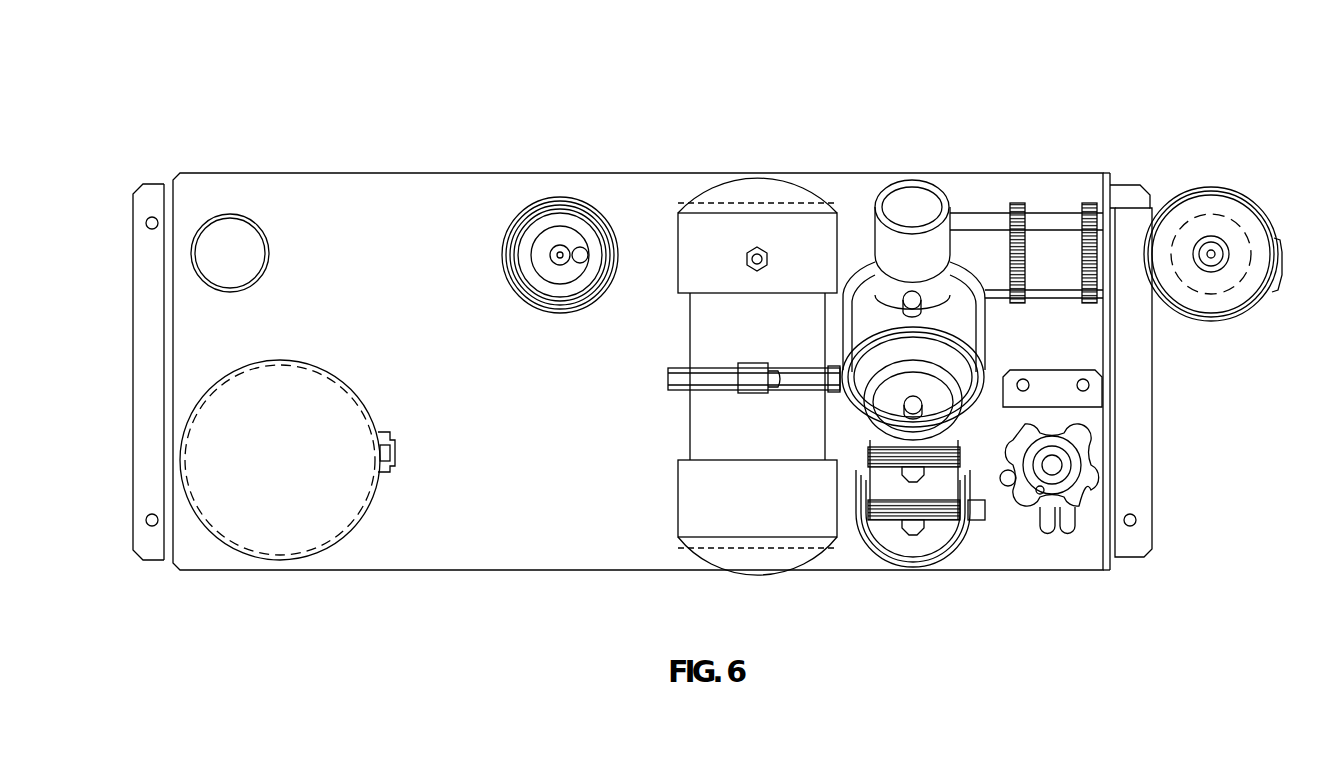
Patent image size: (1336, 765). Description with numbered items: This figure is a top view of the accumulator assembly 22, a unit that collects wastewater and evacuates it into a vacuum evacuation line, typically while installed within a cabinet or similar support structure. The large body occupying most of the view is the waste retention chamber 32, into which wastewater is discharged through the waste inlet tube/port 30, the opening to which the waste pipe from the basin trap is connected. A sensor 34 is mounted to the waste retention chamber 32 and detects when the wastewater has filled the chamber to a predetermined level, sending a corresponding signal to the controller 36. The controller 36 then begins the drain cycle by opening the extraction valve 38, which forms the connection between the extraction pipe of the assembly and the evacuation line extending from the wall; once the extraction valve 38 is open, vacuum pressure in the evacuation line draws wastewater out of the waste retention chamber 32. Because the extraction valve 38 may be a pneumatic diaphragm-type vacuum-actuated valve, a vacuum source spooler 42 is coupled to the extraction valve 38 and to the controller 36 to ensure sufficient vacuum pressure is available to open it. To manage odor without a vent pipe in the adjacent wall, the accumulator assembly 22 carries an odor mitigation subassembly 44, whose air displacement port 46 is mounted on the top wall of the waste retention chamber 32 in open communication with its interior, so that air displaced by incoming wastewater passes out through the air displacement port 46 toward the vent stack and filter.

The accumulator assembly 22 is at (1110, 90).
The waste inlet tube/port 30 is at (202, 252).
The waste retention chamber 32 is at (168, 372).
The sensor 34 is at (562, 198).
The controller 36 is at (1092, 467).
The extraction valve 38 is at (917, 195).
The vacuum source spooler 42 is at (783, 225).
The odor mitigation subassembly 44 is at (1268, 193).
The air displacement port 46 is at (1042, 240).